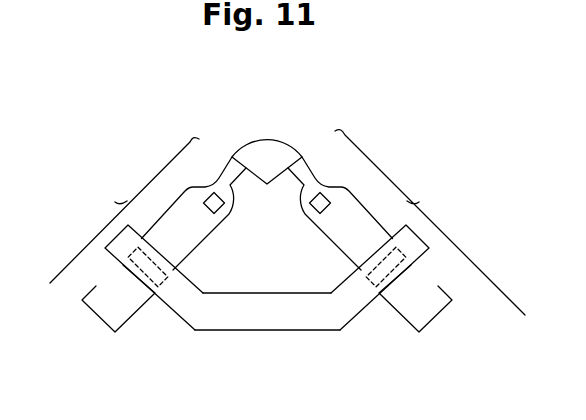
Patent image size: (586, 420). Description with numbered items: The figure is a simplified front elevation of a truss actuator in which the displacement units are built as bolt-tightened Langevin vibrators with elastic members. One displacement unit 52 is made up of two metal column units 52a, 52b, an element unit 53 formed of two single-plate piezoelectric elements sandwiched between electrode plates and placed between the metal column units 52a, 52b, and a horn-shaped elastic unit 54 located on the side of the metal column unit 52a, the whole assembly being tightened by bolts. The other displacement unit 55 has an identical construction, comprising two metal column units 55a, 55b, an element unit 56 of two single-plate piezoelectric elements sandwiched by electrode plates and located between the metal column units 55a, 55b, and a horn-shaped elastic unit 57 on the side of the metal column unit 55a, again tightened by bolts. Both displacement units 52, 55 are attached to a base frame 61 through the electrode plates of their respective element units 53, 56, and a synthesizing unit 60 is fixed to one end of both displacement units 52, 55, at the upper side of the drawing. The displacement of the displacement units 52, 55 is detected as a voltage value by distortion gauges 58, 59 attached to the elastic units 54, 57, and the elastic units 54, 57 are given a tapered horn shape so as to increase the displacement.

The displacement unit 52 is at (430, 222).
The metal column unit 52a is at (343, 257).
The metal column unit 52b is at (412, 302).
The element unit 53 is at (407, 259).
The elastic unit 54 is at (306, 158).
The displacement unit 55 is at (124, 210).
The metal column unit 55a is at (186, 242).
The metal column unit 55b is at (122, 307).
The element unit 56 is at (127, 259).
The elastic unit 57 is at (195, 187).
The distortion gauge 58 is at (309, 204).
The distortion gauge 59 is at (213, 192).
The synthesizing unit 60 is at (265, 150).
The base frame 61 is at (266, 312).